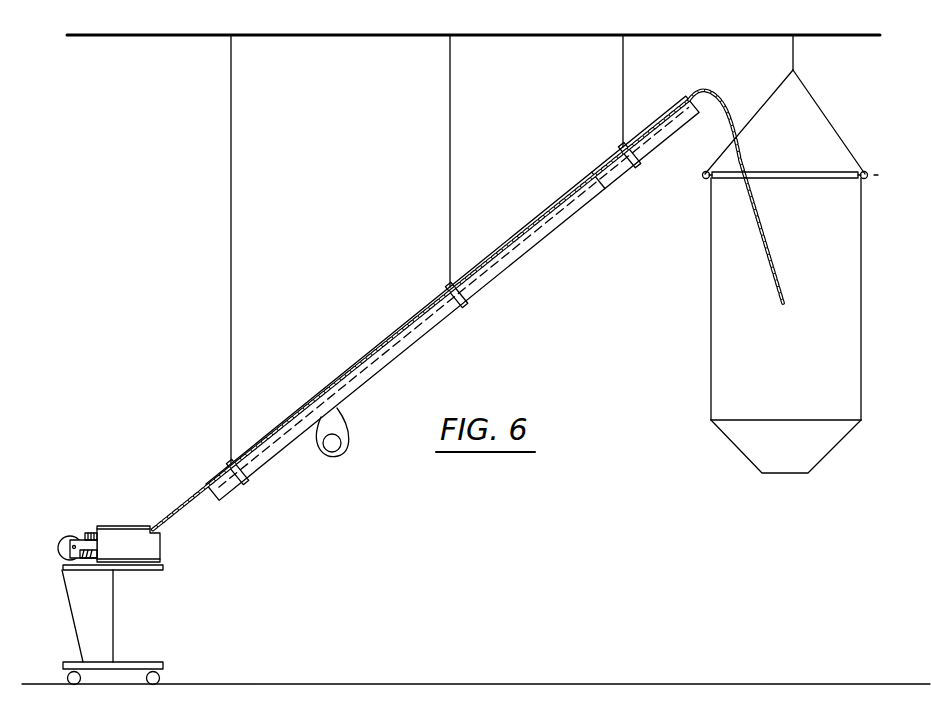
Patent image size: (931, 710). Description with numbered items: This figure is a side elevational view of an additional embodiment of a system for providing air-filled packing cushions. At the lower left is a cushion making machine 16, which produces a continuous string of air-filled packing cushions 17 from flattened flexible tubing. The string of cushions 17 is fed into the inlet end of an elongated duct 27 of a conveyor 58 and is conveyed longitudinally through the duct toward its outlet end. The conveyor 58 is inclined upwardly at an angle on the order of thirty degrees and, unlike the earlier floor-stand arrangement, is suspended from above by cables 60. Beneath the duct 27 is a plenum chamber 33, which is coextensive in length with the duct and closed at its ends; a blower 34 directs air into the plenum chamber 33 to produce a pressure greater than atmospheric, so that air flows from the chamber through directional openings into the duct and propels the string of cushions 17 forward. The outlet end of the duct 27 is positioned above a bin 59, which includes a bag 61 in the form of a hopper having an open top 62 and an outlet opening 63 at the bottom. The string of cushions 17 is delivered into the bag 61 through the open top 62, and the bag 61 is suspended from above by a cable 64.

The cushion making machine 16 is at (85, 518).
The string of air-filled packing cushions 17 is at (183, 512).
The elongated duct 27 is at (553, 205).
The plenum chamber 33 is at (508, 260).
The blower 34 is at (334, 448).
The conveyor 58 is at (453, 298).
The bin 59 is at (757, 282).
The cables 60 is at (230, 215).
The bag 61 is at (733, 334).
The open top 62 is at (808, 160).
The outlet opening 63 is at (776, 474).
The cable 64 is at (793, 50).